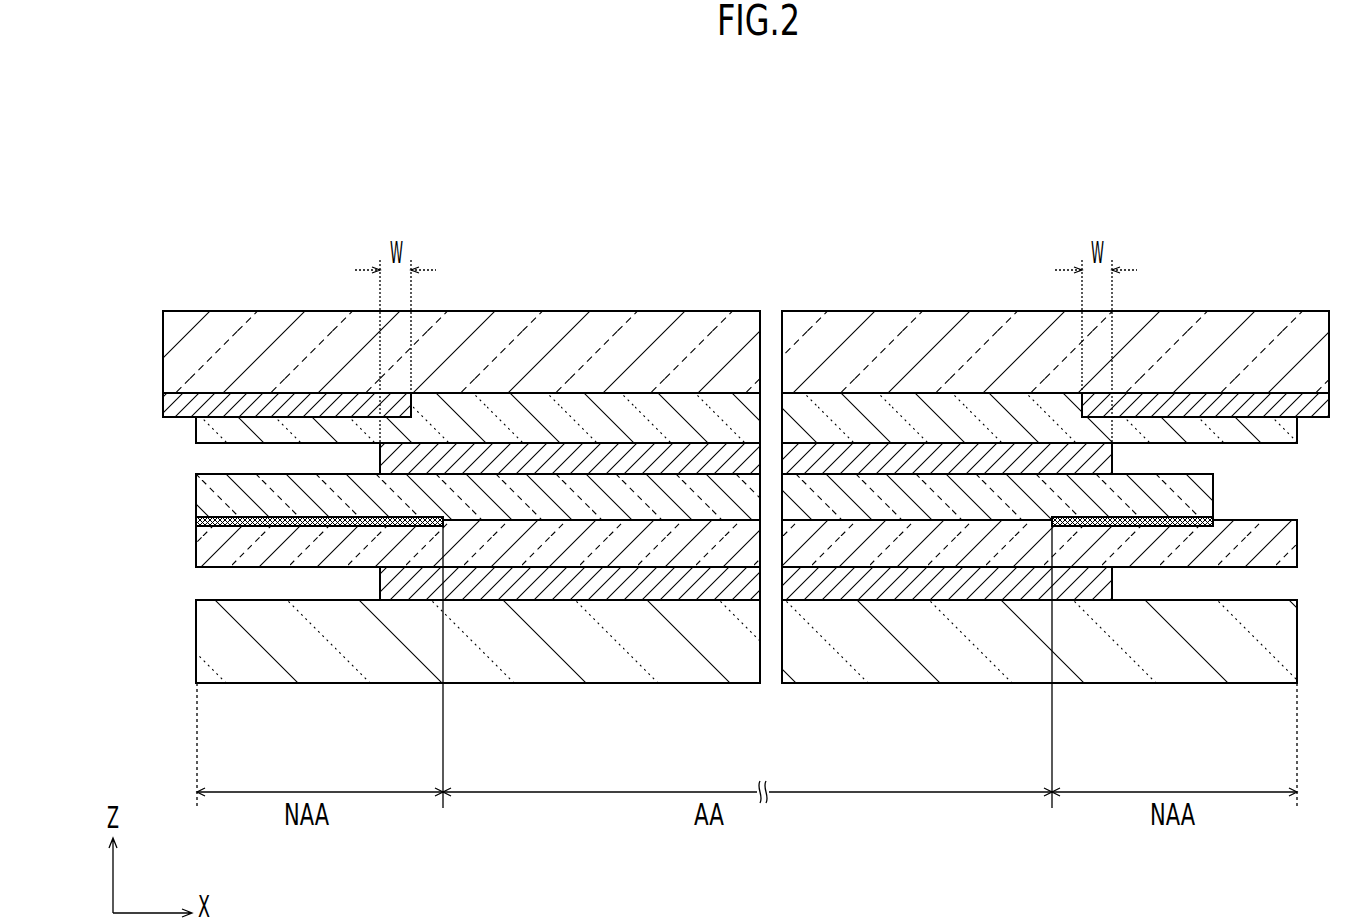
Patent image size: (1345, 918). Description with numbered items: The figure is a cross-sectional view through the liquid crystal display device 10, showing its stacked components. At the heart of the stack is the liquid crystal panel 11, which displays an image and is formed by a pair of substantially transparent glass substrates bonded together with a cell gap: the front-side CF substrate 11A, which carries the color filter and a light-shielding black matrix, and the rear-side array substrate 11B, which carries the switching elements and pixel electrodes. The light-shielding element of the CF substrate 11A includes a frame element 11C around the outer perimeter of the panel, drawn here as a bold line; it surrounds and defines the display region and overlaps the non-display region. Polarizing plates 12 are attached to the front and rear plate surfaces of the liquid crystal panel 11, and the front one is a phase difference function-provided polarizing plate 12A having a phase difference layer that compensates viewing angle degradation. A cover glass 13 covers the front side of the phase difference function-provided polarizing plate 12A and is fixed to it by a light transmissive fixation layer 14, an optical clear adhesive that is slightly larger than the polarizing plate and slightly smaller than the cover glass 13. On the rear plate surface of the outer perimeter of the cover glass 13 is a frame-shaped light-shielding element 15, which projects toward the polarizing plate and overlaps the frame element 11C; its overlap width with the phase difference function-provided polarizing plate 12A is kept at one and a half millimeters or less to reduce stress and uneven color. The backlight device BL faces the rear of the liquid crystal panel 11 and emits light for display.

The liquid crystal display device 10 is at (746, 493).
The liquid crystal panel 11 is at (746, 496).
The CF substrate 11A is at (690, 492).
The array substrate 11B is at (822, 545).
The frame element 11C is at (310, 526).
The polarizing plate 12 is at (548, 588).
The phase difference function-provided polarizing plate 12A is at (485, 457).
The cover glass 13 is at (553, 333).
The light transmissive fixation layer 14 is at (615, 413).
The frame-shaped light-shielding element 15 is at (250, 405).
The backlight device BL is at (672, 650).